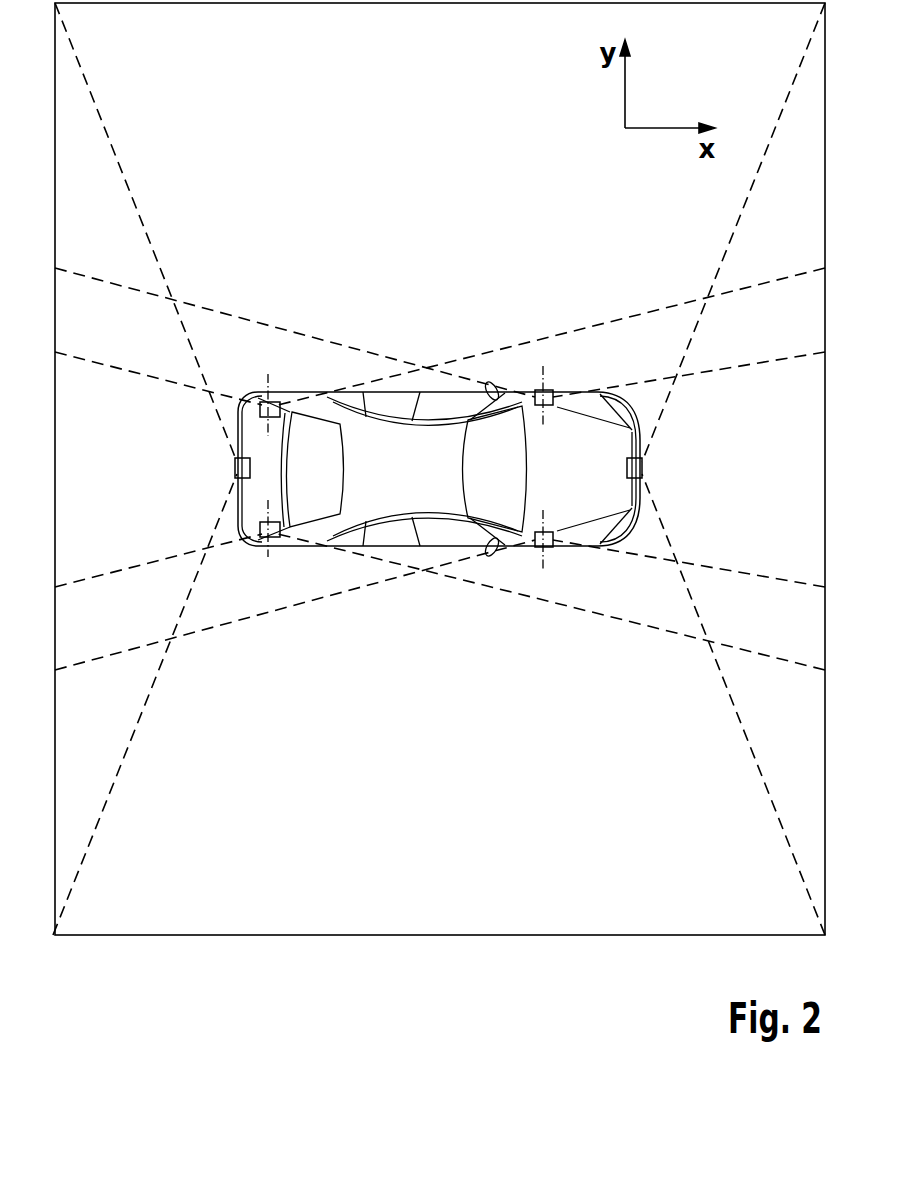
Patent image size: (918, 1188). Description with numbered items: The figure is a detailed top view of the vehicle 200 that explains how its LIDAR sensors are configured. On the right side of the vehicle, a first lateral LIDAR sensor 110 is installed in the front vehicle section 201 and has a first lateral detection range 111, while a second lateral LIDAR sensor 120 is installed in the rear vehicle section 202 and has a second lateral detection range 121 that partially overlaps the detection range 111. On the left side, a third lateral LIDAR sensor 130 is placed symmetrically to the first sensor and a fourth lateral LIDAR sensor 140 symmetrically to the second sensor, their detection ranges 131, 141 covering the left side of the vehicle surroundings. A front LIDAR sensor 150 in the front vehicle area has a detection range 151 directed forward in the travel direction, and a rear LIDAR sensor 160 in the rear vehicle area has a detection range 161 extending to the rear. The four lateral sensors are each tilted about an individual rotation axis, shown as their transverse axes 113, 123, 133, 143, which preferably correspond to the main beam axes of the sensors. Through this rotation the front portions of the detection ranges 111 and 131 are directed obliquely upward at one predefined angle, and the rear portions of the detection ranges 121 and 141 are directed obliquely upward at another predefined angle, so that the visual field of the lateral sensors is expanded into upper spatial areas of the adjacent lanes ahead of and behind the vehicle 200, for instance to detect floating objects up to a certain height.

The vehicle 200 is at (404, 436).
The first lateral LIDAR sensor 110 is at (548, 548).
The second lateral LIDAR sensor 120 is at (265, 537).
The third lateral LIDAR sensor 130 is at (549, 391).
The fourth lateral LIDAR sensor 140 is at (266, 402).
The front LIDAR sensor 150 is at (642, 468).
The rear LIDAR sensor 160 is at (235, 468).
The first lateral detection range 111 is at (761, 576).
The second lateral detection range 121 is at (133, 568).
The detection range of third lateral LIDAR sensor 131 is at (760, 363).
The detection range of fourth lateral LIDAR sensor 141 is at (129, 371).
The detection range of front LIDAR sensor 151 is at (737, 718).
The detection range of rear LIDAR sensor 161 is at (142, 718).
The transverse axis 113 is at (543, 570).
The transverse axis 123 is at (268, 557).
The transverse axis 133 is at (543, 370).
The transverse axis 143 is at (270, 376).
The front vehicle section 201 is at (612, 569).
The rear vehicle section 202 is at (322, 565).